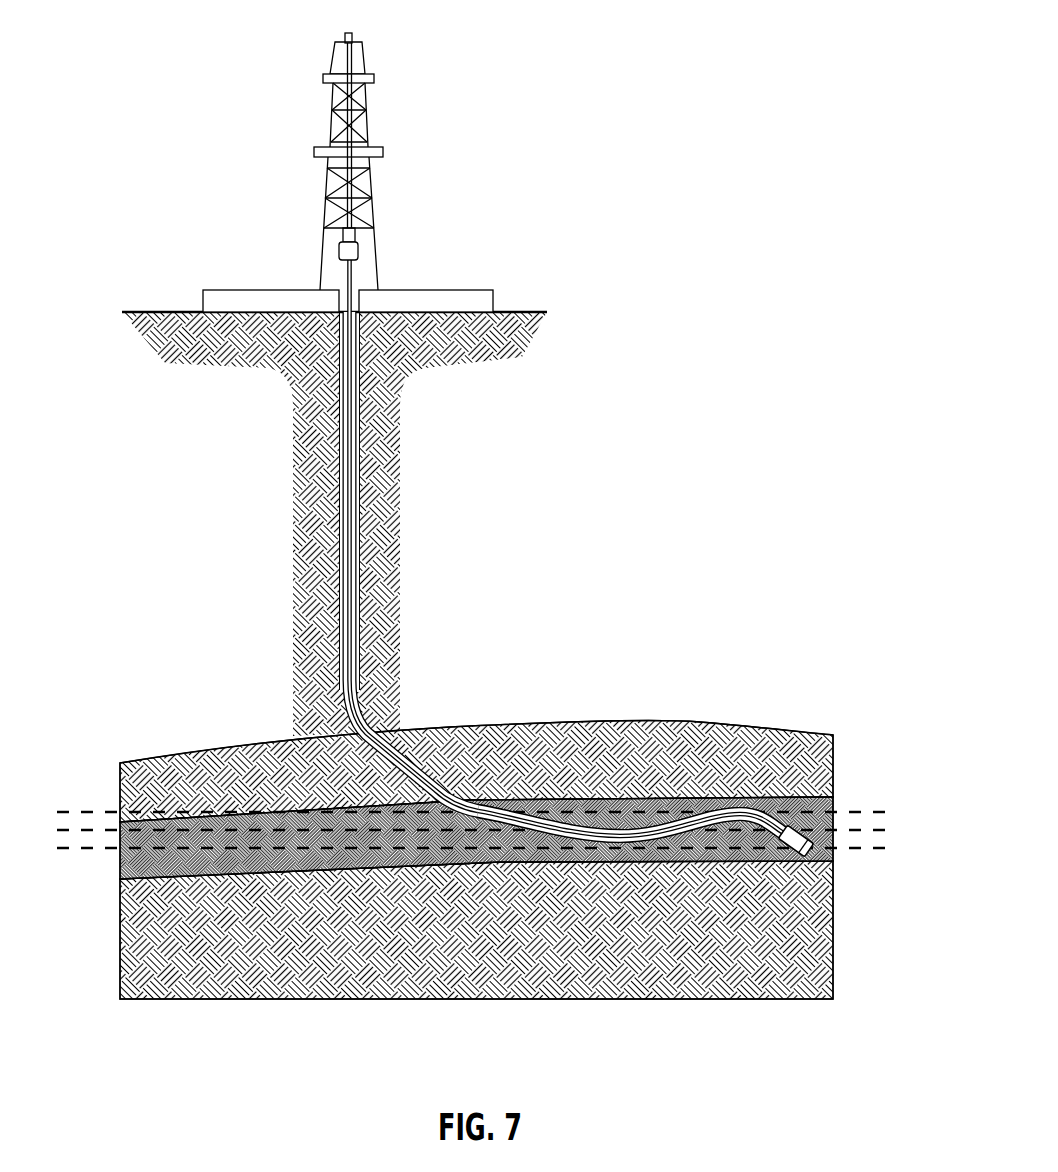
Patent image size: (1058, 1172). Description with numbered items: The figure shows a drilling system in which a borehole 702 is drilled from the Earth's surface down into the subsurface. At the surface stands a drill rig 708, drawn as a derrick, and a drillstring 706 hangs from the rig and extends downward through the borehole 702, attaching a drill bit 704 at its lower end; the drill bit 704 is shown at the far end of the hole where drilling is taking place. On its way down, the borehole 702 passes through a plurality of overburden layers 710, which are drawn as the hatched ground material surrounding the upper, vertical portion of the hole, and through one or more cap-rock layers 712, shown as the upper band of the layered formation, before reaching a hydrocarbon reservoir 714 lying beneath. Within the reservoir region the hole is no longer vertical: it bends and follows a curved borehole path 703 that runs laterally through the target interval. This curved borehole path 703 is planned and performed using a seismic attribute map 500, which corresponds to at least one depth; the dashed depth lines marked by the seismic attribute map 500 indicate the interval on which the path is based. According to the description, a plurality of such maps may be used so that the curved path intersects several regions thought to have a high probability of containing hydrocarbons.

The seismic attribute map 500 is at (880, 812).
The borehole 702 is at (337, 457).
The curved borehole path 703 is at (567, 823).
The drill bit 704 is at (797, 830).
The drillstring 706 is at (352, 275).
The drill rig 708 is at (373, 183).
The overburden layers 710 is at (532, 311).
The cap-rock layers 712 is at (127, 788).
The hydrocarbon reservoir 714 is at (127, 858).